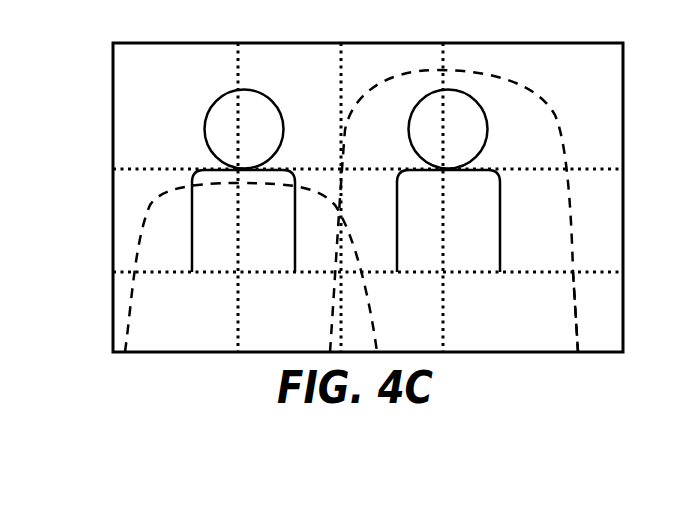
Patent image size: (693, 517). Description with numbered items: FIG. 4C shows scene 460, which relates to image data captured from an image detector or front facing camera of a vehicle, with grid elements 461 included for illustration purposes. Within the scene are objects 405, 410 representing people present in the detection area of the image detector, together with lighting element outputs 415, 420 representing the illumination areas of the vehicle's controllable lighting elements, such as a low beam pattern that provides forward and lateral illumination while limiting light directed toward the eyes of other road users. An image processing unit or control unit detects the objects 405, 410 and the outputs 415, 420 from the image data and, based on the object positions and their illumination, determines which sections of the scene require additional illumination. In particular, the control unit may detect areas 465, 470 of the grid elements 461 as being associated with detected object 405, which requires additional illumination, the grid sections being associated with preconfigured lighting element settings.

The object 405 is at (206, 138).
The object 410 is at (432, 138).
The lighting element output 415 is at (137, 328).
The lighting element output 420 is at (576, 335).
The scene 460 is at (613, 124).
The grid elements 461 is at (445, 318).
The area 465 is at (195, 62).
The area 470 is at (297, 62).